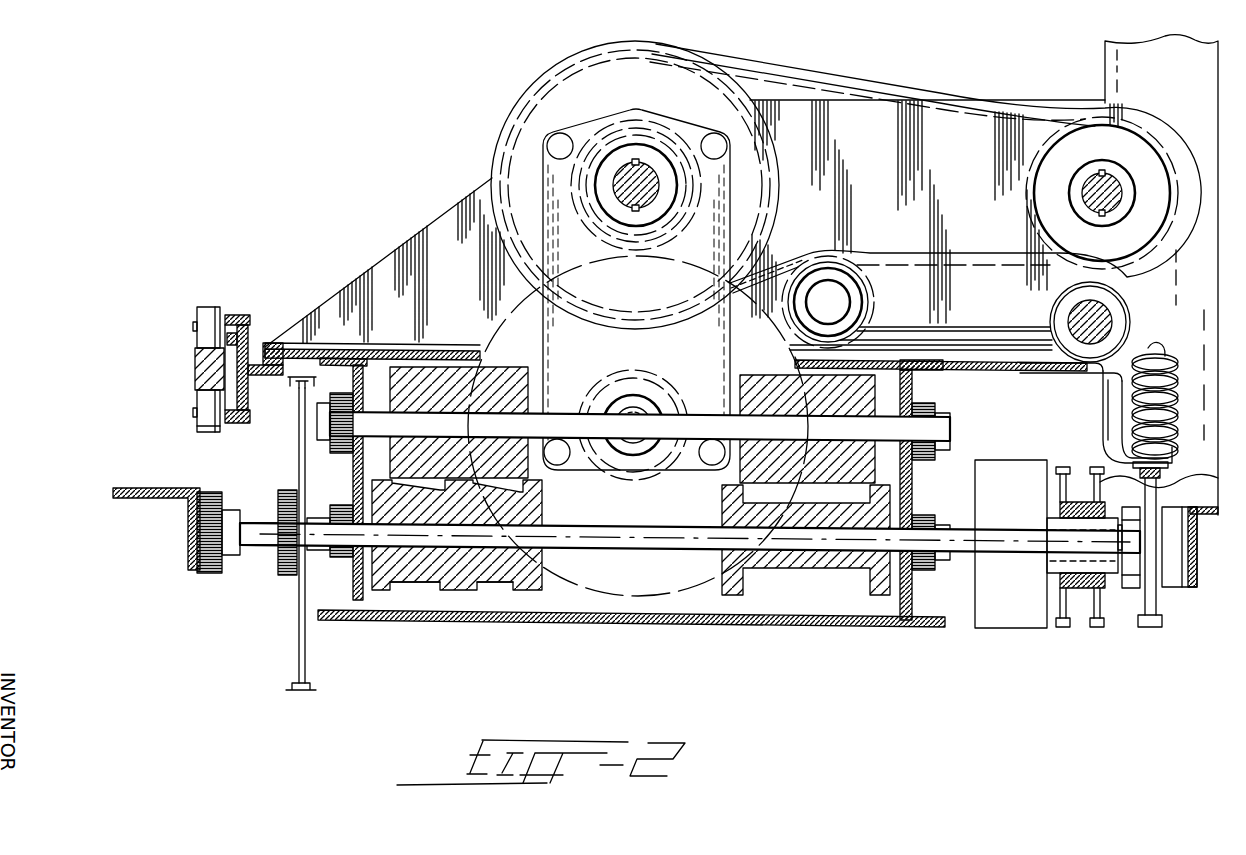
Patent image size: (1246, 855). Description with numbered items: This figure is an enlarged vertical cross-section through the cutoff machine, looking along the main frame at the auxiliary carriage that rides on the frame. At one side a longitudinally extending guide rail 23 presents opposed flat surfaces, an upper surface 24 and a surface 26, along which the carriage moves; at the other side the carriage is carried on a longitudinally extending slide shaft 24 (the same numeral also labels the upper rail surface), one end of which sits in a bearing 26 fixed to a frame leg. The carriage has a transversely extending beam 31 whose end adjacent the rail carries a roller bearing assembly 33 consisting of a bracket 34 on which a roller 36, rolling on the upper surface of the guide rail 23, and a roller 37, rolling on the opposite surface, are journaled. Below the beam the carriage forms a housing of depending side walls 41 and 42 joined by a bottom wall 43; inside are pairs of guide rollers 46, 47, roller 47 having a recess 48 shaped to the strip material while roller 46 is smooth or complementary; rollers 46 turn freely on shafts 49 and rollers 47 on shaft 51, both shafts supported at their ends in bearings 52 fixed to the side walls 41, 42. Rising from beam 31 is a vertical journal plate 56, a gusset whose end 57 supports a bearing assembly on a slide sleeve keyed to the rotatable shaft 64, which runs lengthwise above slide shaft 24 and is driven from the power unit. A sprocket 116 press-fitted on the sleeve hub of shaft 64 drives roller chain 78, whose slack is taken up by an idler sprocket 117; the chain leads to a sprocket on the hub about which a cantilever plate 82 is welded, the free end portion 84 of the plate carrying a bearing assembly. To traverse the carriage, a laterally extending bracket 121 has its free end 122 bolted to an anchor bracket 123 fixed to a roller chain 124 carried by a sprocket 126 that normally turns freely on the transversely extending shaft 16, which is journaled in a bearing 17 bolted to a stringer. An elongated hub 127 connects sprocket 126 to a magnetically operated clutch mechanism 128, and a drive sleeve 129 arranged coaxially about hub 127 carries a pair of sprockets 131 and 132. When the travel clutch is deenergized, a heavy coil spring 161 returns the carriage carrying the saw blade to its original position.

The transversely extending shaft 16 is at (262, 520).
The bearing 17 is at (222, 487).
The guide rail 23 is at (195, 372).
The slide shaft 24 is at (1112, 328).
The guide rail surface 26 is at (199, 395).
The transversely extending beam 31 is at (456, 343).
The roller bearing assembly 33 is at (270, 266).
The bracket 34 is at (250, 393).
The roller 36 is at (211, 307).
The roller 37 is at (206, 436).
The side wall 41 is at (352, 488).
The side wall 42 is at (910, 500).
The bottom wall 43 is at (560, 620).
The guide roller 46 is at (396, 444).
The guide roller 47 is at (520, 580).
The recess 48 is at (418, 592).
The shaft 49 is at (514, 355).
The shaft 51 is at (620, 527).
The bearing 52 is at (338, 448).
The journal plate 56 is at (463, 287).
The end of journal plate 57 is at (1152, 120).
The rotatable shaft 64 is at (1118, 200).
The roller chain 78 is at (912, 98).
The plate 82 is at (730, 221).
The free end portion 84 is at (571, 434).
The sprocket 116 is at (1036, 195).
The idler sprocket 117 is at (866, 300).
The laterally extending bracket 121 is at (1104, 378).
The free end of bracket 122 is at (1116, 424).
The anchor bracket 123 is at (1170, 437).
The roller chain 124 is at (1155, 486).
The sprocket 126 is at (1152, 604).
The elongated hub 127 is at (1102, 556).
The magnetically operated clutch mechanism 128 is at (1025, 556).
The drive sleeve 129 is at (1085, 590).
The sprocket 131 is at (1063, 468).
The sprocket 132 is at (1097, 466).
The coil spring 161 is at (1190, 358).